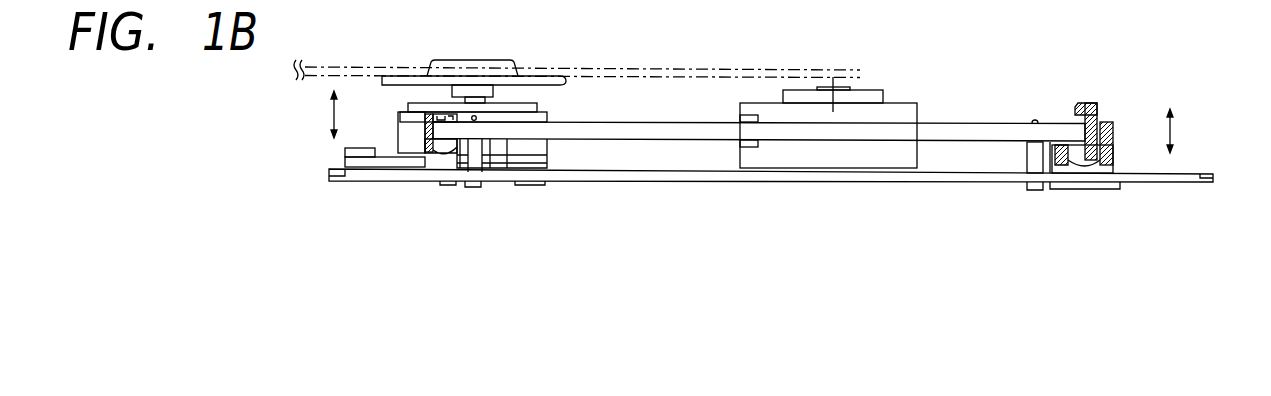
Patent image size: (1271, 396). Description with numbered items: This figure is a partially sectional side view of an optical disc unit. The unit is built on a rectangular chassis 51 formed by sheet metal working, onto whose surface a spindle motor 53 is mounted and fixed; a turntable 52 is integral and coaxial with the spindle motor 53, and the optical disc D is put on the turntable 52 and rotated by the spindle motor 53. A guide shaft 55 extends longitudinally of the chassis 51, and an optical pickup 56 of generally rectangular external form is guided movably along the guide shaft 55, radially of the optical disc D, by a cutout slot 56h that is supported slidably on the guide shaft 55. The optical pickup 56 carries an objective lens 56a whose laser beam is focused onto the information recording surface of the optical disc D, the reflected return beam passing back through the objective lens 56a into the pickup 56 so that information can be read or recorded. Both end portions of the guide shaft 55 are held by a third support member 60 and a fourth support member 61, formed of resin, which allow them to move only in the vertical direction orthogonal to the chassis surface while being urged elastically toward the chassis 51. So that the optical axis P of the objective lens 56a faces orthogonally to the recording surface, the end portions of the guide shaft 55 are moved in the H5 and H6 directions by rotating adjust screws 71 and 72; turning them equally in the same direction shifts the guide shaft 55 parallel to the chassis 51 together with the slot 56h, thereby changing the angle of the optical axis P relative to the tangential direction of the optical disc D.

The chassis 51 is at (605, 181).
The turntable 52 is at (553, 83).
The spindle motor 53 is at (410, 148).
The guide shaft 55 is at (669, 122).
The optical pickup 56 is at (920, 117).
The objective lens 56a is at (830, 87).
The cutout slot 56h is at (750, 123).
The third support member 60 is at (423, 125).
The fourth support member 61 is at (1114, 130).
The adjust screw 71 is at (473, 165).
The adjust screw 72 is at (1033, 163).
The optical disc D is at (625, 77).
The optical axis P is at (835, 102).
The H5 direction H5 is at (333, 118).
The H6 direction H6 is at (1171, 110).